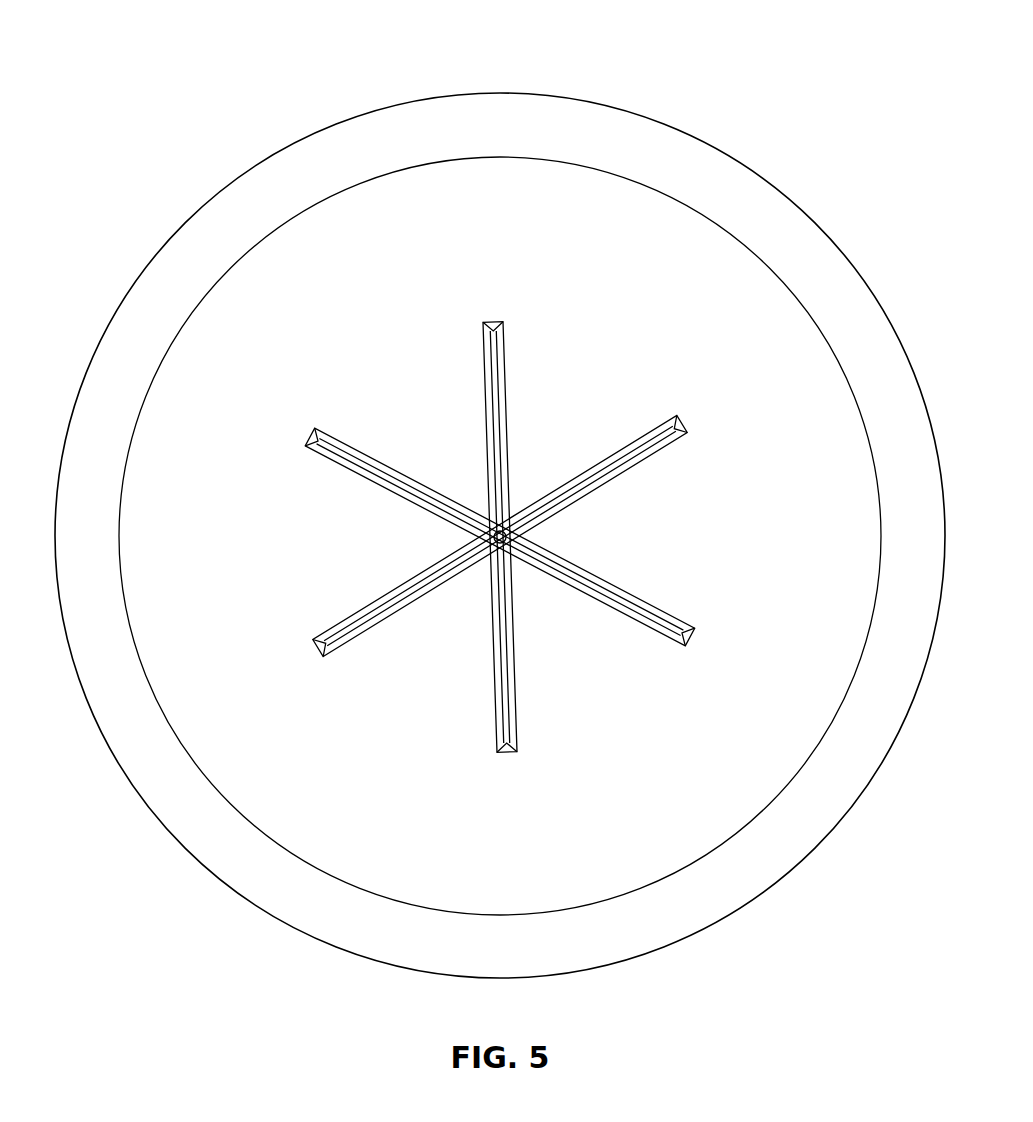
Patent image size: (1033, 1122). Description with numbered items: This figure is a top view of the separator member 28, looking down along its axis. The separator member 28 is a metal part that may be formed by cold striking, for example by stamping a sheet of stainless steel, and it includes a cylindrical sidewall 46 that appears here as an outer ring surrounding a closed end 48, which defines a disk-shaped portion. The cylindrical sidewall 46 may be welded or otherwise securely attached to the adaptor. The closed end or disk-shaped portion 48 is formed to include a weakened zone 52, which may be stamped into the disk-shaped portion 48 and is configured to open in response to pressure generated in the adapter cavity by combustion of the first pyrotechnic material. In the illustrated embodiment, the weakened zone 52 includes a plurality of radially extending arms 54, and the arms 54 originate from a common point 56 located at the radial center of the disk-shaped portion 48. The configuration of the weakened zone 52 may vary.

The separator member 28 is at (218, 38).
The cylindrical sidewall 46 is at (77, 400).
The closed end 48 is at (335, 787).
The weakened zone 52 is at (507, 385).
The radially extending arms 54 is at (640, 462).
The common point 56 is at (492, 568).